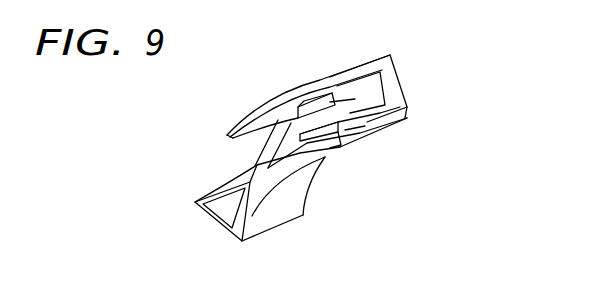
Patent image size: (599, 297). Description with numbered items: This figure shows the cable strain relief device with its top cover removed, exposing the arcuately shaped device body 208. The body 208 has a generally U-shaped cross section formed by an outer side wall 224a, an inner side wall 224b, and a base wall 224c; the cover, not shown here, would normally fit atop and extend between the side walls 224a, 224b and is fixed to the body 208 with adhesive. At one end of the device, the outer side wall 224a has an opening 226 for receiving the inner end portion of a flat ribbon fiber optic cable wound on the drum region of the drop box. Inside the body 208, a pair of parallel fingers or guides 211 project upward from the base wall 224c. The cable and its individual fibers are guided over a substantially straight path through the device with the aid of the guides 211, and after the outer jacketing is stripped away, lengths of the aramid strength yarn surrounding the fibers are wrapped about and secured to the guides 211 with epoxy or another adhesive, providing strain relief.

The device body 208 is at (280, 203).
The opening 226 is at (228, 136).
The outer side wall 224a is at (322, 74).
The inner side wall 224b is at (322, 151).
The base wall 224c is at (398, 86).
The fingers or guides 211 is at (330, 102).